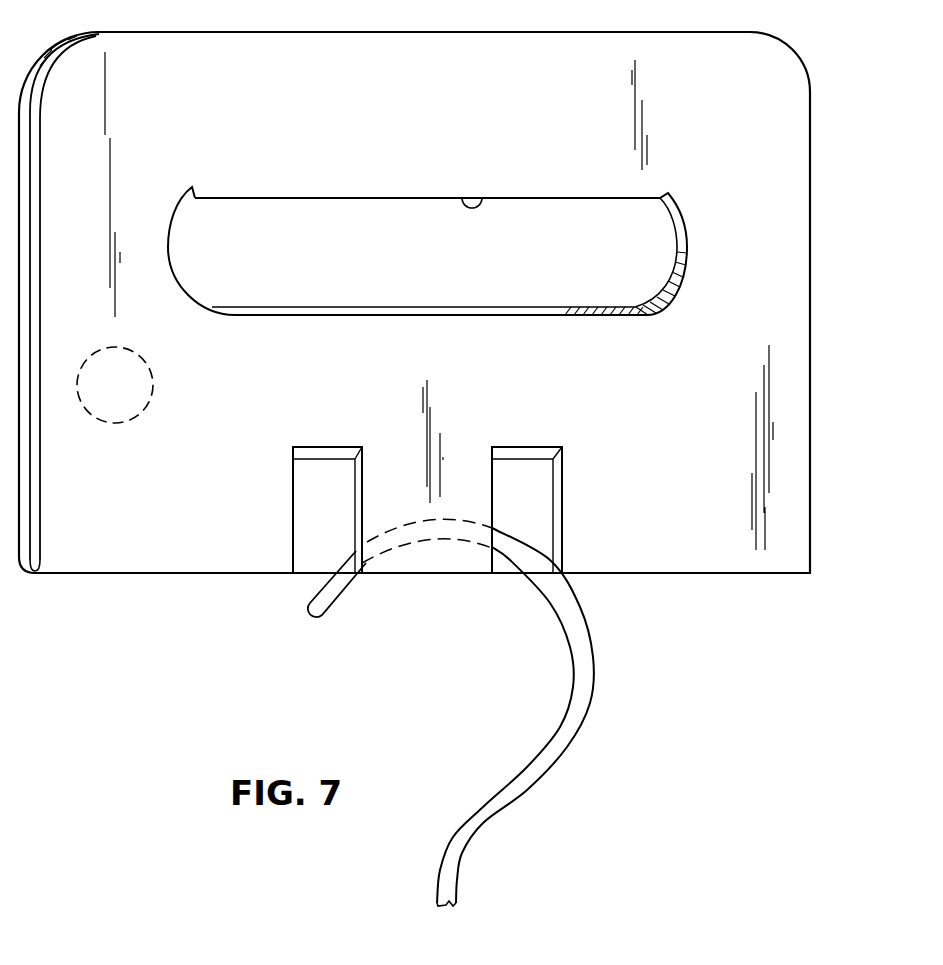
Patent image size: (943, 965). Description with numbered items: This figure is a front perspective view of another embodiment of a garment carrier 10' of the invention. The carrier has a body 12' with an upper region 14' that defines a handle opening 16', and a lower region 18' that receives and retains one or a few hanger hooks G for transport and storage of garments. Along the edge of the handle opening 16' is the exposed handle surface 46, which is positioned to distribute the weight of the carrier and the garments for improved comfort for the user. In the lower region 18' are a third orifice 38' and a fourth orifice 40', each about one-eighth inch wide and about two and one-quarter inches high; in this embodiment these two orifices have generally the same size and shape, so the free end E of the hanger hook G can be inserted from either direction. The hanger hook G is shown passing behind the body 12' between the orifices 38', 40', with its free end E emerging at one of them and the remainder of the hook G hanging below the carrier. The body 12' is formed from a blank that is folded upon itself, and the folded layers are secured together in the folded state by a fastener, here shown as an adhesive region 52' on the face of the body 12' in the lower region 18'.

The garment carrier 10' is at (455, 465).
The body 12' is at (414, 302).
The upper region 14' is at (496, 170).
The handle opening 16' is at (427, 251).
The lower region 18' is at (657, 443).
The third orifice 38' is at (329, 489).
The fourth orifice 40' is at (520, 489).
The exposed handle surface 46 is at (484, 198).
The adhesive region 52' is at (135, 394).
The free end of hanger hook E is at (320, 615).
The hanger hook G is at (587, 667).